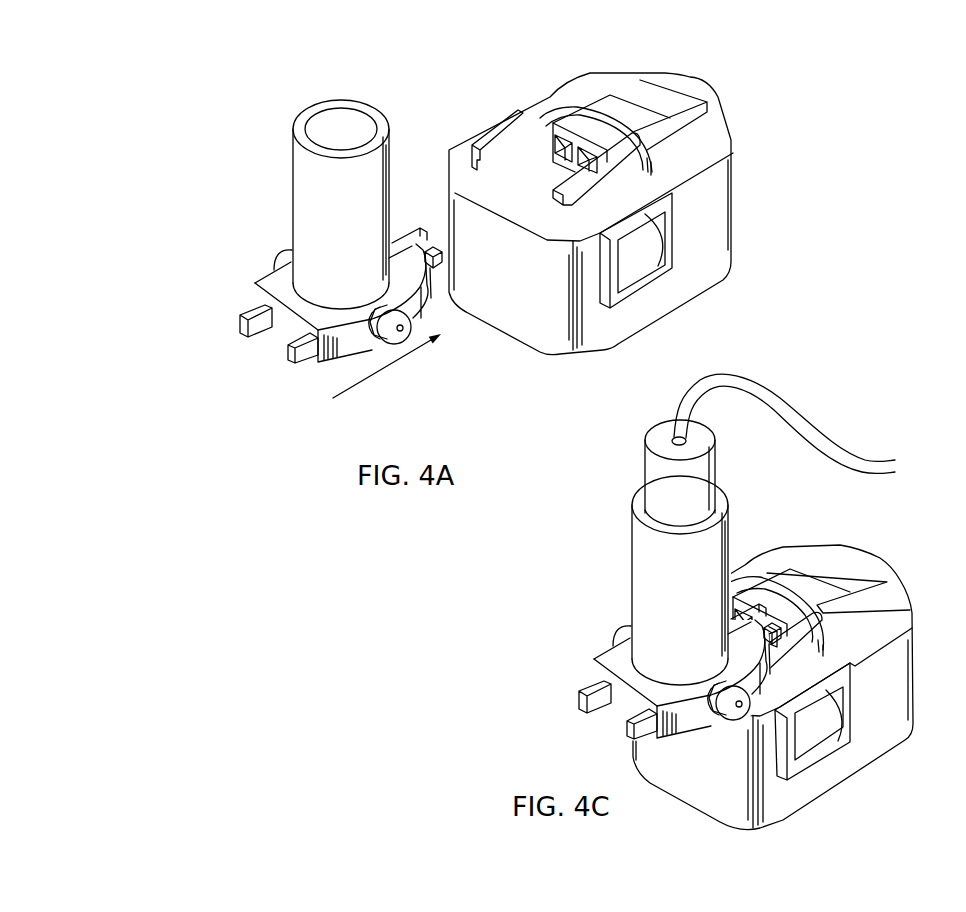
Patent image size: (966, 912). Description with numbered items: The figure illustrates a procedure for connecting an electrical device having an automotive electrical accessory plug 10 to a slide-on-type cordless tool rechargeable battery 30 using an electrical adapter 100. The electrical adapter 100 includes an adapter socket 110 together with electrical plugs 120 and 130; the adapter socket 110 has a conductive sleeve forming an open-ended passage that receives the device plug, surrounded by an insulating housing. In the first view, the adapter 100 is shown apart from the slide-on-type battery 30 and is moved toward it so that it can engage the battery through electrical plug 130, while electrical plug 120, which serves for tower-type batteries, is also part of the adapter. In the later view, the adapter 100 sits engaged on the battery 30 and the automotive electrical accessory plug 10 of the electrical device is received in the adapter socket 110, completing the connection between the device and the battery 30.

In FIG. 4C, the automotive electrical accessory plug 10 is at (630, 441).
In FIG. 4A, the slide-on-type cordless tool rechargeable battery 30 is at (775, 167).
In FIG. 4C, the slide-on-type cordless tool rechargeable battery 30 is at (888, 786).
In FIG. 4A, the electrical adapter 100 is at (436, 106).
In FIG. 4C, the electrical adapter 100 is at (595, 582).
In FIG. 4A, the adapter socket 110 is at (288, 113).
In FIG. 4A, the electrical plug 120 is at (268, 360).
In FIG. 4A, the electrical plug 130 is at (440, 290).